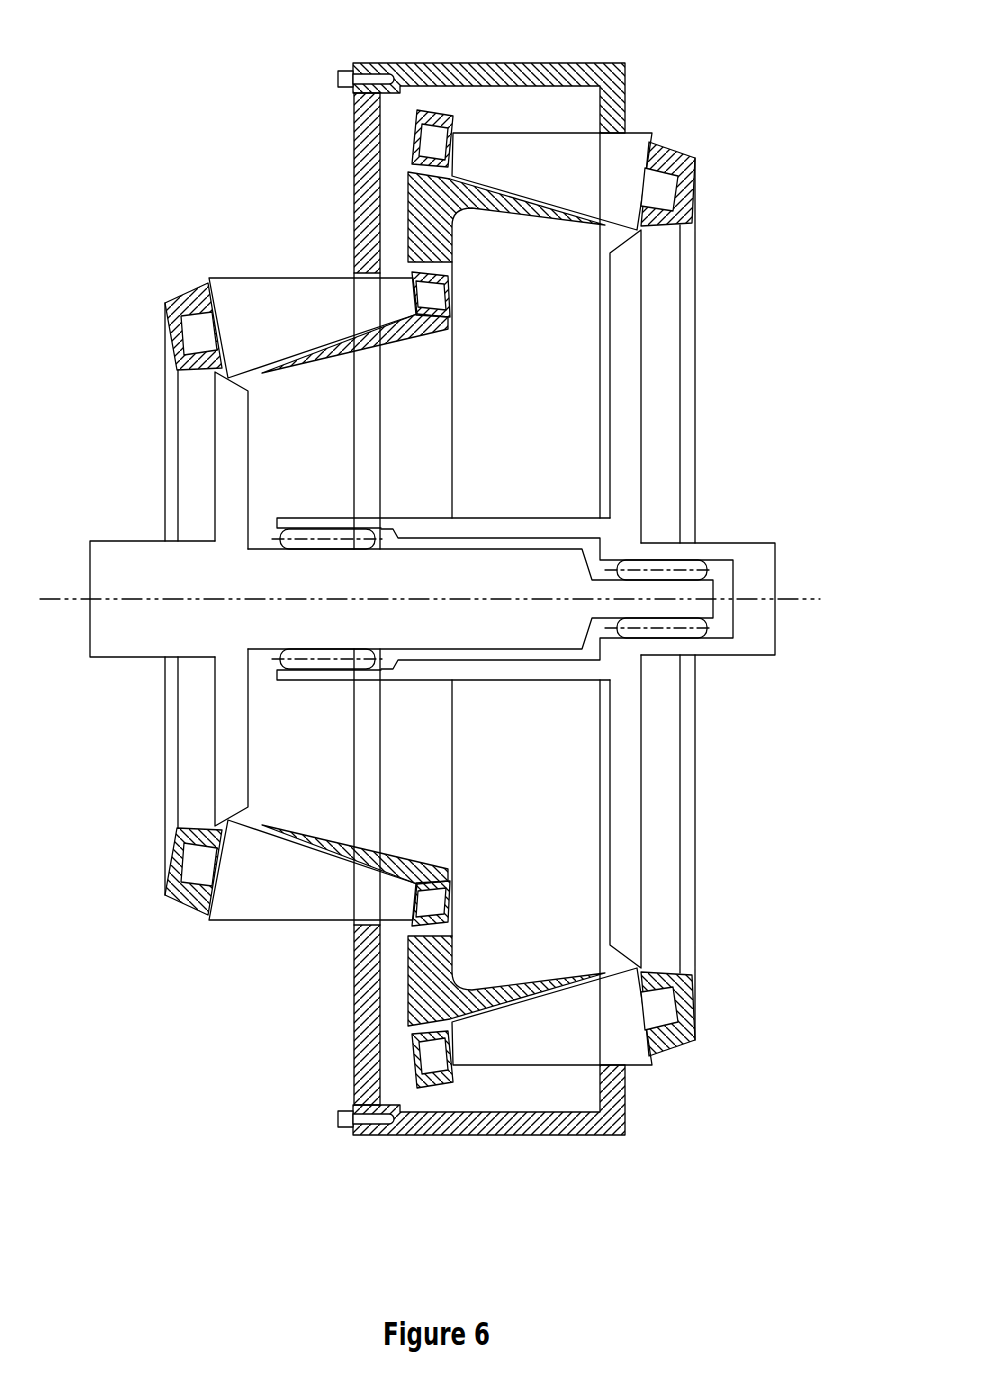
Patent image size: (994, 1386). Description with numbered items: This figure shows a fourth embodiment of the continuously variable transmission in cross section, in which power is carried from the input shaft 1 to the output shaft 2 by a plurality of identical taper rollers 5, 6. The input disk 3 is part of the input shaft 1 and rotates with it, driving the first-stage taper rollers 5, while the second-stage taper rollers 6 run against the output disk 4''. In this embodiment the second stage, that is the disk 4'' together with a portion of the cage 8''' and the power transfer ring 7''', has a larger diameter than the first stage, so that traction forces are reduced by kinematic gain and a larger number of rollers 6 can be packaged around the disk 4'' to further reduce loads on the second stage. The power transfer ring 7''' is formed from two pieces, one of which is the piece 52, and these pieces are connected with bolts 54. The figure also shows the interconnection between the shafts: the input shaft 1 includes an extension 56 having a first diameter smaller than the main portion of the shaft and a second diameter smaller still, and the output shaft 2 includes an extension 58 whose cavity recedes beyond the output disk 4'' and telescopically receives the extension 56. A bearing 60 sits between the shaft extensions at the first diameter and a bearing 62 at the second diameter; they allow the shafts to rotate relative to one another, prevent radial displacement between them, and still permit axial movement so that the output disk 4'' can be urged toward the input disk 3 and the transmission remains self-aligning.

The input shaft 1 is at (117, 566).
The output shaft 2 is at (757, 563).
The input disk 3 is at (232, 435).
The output disk 4'' is at (691, 599).
The taper roller 5 is at (250, 298).
The taper roller 6 is at (627, 152).
The power transfer ring 7''' is at (312, 595).
The cage 8''' is at (435, 599).
The piece of power transfer ring 52 is at (512, 63).
The bolt 54 is at (340, 74).
The extension of input shaft 56 is at (540, 548).
The extension of output shaft 58 is at (317, 679).
The bearing 60 is at (283, 537).
The bearing 62 is at (707, 633).